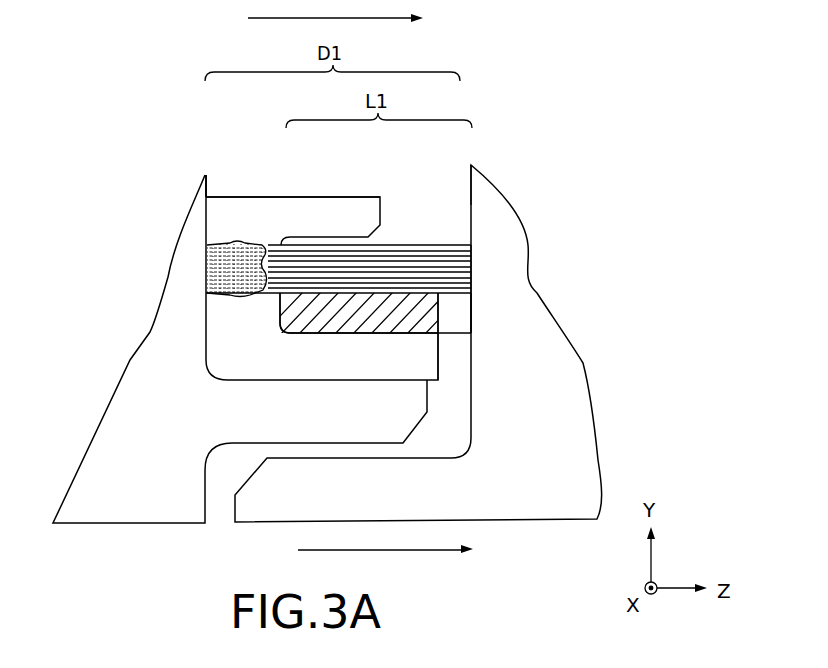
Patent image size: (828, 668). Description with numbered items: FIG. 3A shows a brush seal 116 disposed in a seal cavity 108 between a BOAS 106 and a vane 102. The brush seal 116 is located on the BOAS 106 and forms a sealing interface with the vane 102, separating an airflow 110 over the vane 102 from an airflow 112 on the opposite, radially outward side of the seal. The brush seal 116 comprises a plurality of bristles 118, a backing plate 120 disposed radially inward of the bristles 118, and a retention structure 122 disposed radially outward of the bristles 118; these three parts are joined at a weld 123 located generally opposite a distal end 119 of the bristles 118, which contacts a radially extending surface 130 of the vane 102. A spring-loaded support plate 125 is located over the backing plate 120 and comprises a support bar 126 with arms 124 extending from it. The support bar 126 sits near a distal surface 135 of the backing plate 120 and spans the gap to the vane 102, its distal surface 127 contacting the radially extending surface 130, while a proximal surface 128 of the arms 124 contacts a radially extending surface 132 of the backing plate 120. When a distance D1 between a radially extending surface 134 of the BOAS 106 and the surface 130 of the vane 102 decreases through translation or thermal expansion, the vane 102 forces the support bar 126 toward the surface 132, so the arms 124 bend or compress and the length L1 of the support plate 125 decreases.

The vane 102 is at (522, 488).
The BOAS 106 is at (150, 486).
The seal cavity 108 is at (184, 107).
The airflow 110 is at (369, 550).
The airflow 112 is at (319, 20).
The brush seal 116 is at (290, 186).
The bristles 118 is at (390, 260).
The distal end 119 is at (486, 258).
The backing plate 120 is at (238, 350).
The retention structure 122 is at (267, 231).
The weld 123 is at (195, 251).
The arms 124 is at (368, 325).
The spring-loaded support plate 125 is at (434, 342).
The support bar 126 is at (453, 312).
The distal surface 127 is at (486, 322).
The proximal surface 128 is at (266, 310).
The radially extending surface 130 is at (469, 206).
The radially extending surface 132 is at (283, 324).
The radially extending surface 134 is at (207, 196).
The distal surface 135 is at (440, 371).